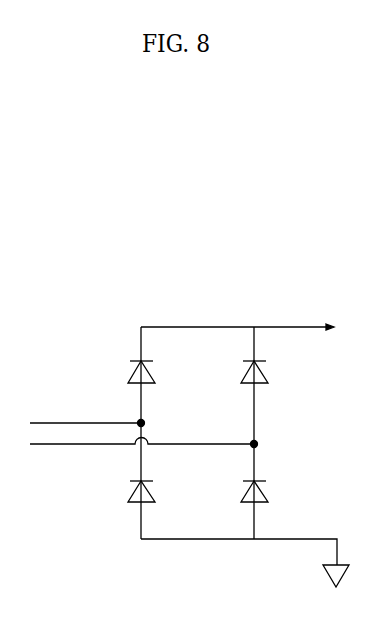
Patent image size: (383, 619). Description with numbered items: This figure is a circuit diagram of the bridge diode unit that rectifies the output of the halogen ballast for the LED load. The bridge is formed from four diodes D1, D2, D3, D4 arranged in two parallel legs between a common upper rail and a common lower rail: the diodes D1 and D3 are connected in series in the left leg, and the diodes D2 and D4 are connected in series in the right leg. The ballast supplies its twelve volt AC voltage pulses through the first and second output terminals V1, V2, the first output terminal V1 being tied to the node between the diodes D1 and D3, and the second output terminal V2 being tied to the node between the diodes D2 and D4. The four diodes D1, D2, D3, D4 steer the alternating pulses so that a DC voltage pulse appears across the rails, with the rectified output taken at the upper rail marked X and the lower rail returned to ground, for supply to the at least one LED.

The diode D1 is at (156, 372).
The diode D2 is at (269, 372).
The diode D3 is at (156, 491).
The diode D4 is at (269, 491).
The first output terminal V1 is at (87, 411).
The second output terminal V2 is at (144, 456).
The output terminal X is at (339, 327).